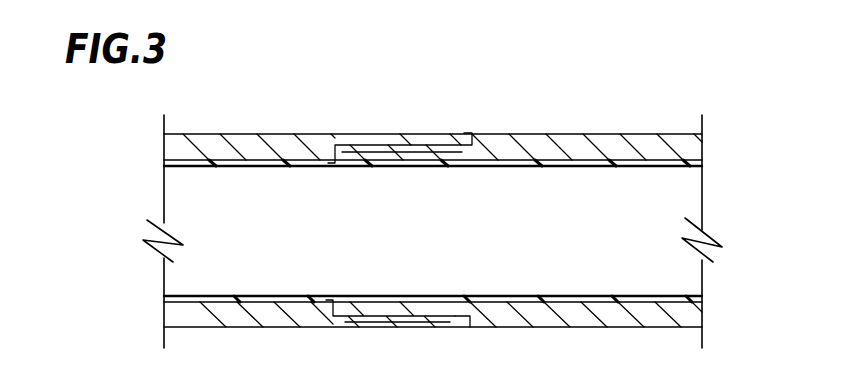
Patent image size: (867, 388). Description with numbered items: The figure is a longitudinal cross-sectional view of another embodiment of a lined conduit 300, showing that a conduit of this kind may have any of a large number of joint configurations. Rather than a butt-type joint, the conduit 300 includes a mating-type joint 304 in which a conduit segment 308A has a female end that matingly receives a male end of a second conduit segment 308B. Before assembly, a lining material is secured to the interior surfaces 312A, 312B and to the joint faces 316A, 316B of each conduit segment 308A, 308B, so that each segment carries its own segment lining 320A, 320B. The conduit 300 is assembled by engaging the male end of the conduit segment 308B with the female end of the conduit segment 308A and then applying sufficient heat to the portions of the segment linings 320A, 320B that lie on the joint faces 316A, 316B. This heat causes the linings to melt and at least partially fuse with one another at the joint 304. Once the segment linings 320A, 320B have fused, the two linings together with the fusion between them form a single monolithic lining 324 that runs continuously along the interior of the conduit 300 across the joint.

The conduit 300 is at (668, 65).
The mating-type joint 304 is at (434, 105).
The conduit segment 308A is at (285, 134).
The conduit segment 308B is at (576, 134).
The interior surface 312A is at (288, 297).
The interior surface 312B is at (560, 312).
The joint face 316A is at (403, 328).
The joint face 316B is at (383, 305).
The segment lining 320A is at (283, 167).
The segment lining 320B is at (548, 167).
The monolithic lining 324 is at (436, 168).